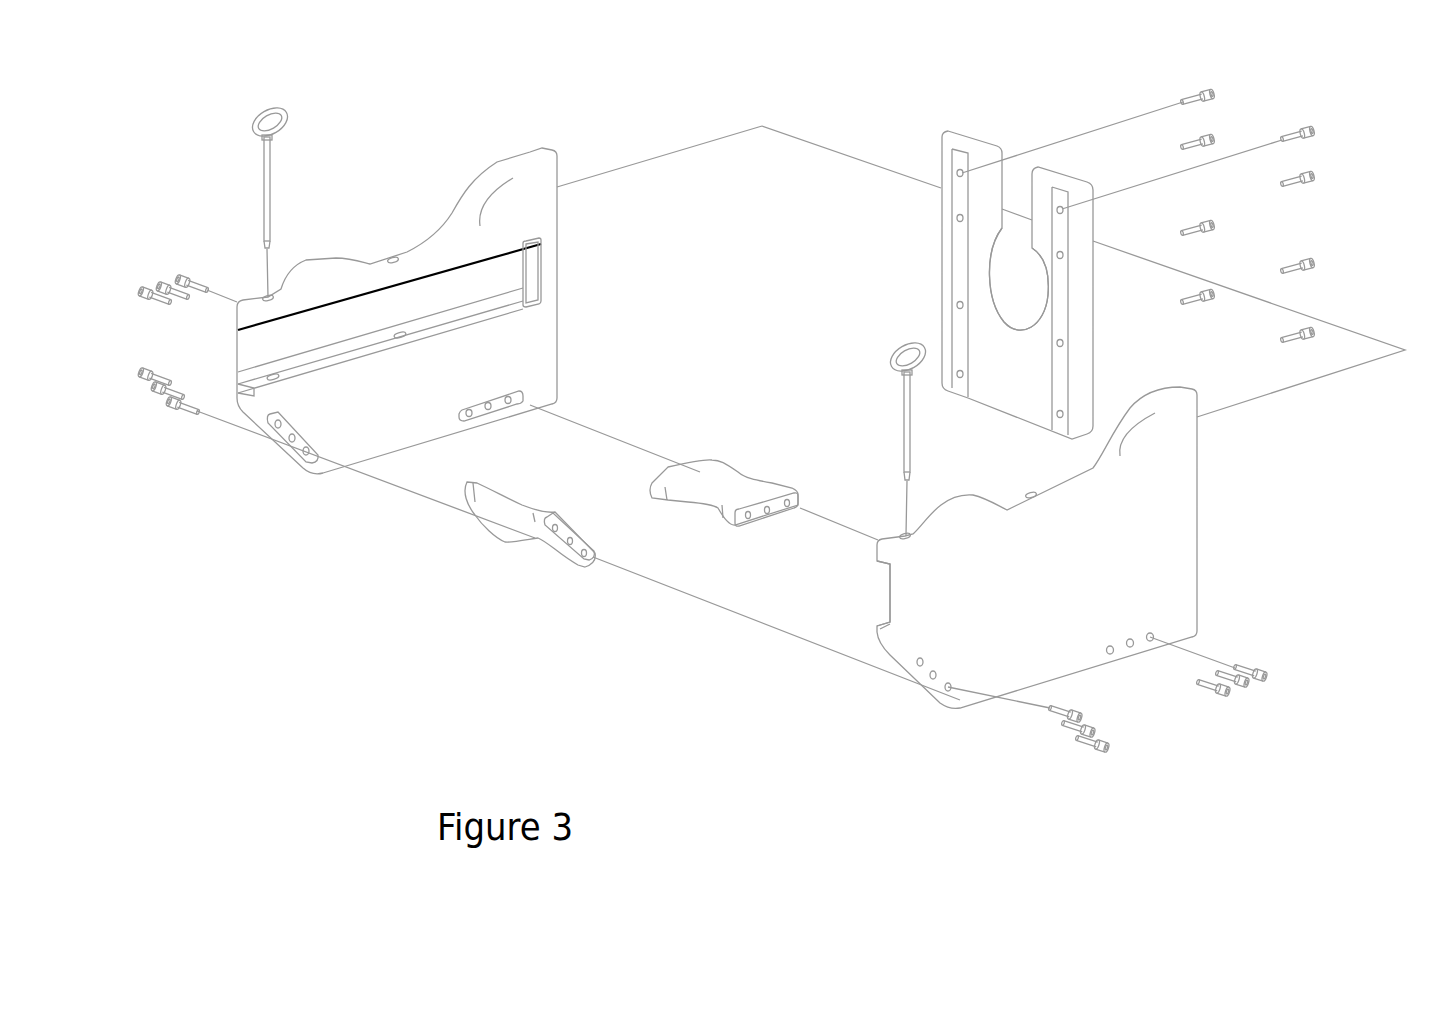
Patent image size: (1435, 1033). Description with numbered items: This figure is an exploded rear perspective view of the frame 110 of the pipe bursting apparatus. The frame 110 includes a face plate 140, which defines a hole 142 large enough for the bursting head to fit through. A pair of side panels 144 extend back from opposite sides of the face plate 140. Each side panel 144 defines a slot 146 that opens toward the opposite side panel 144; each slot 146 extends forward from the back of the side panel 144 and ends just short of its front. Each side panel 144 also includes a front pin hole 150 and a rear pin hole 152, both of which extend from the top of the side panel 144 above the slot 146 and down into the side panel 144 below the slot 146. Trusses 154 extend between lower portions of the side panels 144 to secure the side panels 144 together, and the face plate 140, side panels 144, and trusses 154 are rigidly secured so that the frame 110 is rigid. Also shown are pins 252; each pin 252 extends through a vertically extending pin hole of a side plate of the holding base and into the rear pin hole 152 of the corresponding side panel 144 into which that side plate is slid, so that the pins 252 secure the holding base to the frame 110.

The frame 110 is at (1313, 762).
The face plate 140 is at (941, 260).
The hole 142 is at (1018, 286).
The side panels 144 is at (553, 260).
The slot 146 is at (272, 341).
The front pin hole 150 is at (413, 334).
The rear pin hole 152 is at (279, 376).
The trusses 154 is at (685, 500).
The pin 252 is at (271, 182).